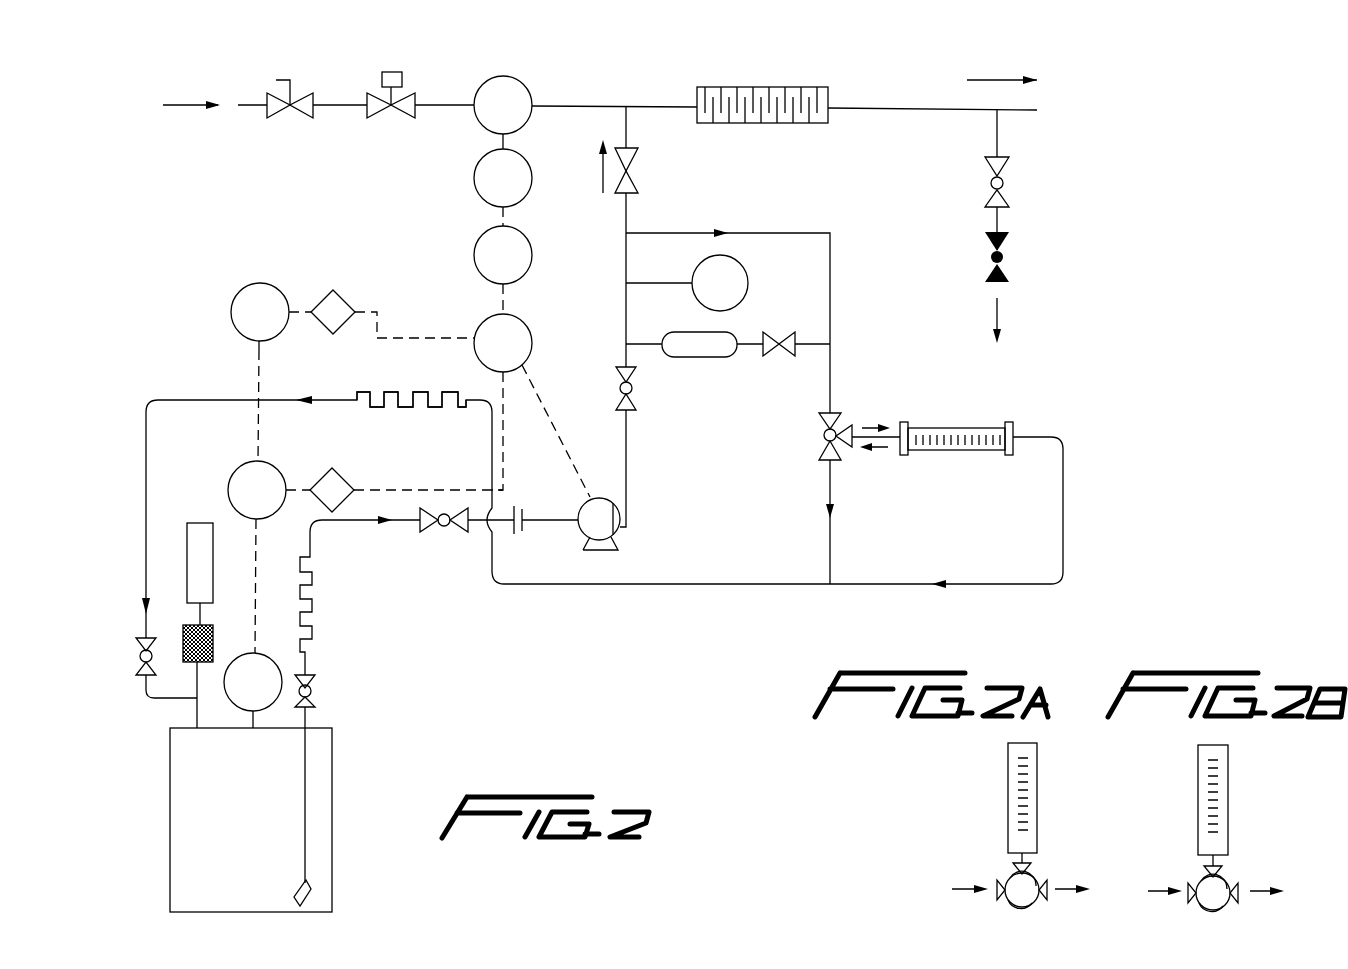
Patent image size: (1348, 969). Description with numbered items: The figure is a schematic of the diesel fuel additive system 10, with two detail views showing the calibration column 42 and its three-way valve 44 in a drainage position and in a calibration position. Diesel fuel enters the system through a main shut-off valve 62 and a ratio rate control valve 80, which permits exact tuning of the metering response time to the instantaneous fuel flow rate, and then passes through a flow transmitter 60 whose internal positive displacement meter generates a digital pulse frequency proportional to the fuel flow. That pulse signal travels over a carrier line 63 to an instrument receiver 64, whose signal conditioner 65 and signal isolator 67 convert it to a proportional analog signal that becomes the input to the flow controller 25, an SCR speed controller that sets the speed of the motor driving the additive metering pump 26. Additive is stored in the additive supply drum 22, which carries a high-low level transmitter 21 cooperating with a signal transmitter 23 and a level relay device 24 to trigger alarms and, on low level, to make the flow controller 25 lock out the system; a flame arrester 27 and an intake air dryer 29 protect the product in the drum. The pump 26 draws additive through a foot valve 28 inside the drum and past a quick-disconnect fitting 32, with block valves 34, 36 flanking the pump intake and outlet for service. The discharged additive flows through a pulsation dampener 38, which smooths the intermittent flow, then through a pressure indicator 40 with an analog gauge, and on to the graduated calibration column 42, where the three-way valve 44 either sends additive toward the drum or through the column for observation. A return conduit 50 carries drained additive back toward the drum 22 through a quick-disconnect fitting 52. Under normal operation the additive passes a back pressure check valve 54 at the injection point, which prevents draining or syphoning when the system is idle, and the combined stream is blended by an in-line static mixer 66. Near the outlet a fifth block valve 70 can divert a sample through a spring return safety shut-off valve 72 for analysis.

In FIG. 2, the fuel additive system 10 is at (1095, 138).
In FIG. 2, the high-low level transmitter 21 is at (278, 667).
In FIG. 2, the additive supply drum 22 is at (332, 765).
In FIG. 2, the signal transmitter 23 is at (233, 474).
In FIG. 2, the level relay device 24 is at (232, 318).
In FIG. 2, the flow controller 25 is at (485, 322).
In FIG. 2, the additive metering pump 26 is at (627, 528).
In FIG. 2, the flame arrester 27 is at (195, 663).
In FIG. 2, the foot valve 28 is at (312, 889).
In FIG. 2, the intake air dryer 29 is at (187, 557).
In FIG. 2, the quick-disconnect fitting 32 is at (317, 695).
In FIG. 2, the block valve 34 is at (443, 535).
In FIG. 2, the block valve 36 is at (616, 399).
In FIG. 2, the pulsation dampener 38 is at (698, 358).
In FIG. 2, the pressure indicator 40 is at (748, 272).
In FIG. 2, the graduated calibration column 42 is at (953, 428).
In FIG. 2A, the graduated calibration column 42 is at (1009, 787).
In FIG. 2B, the graduated calibration column 42 is at (1228, 803).
In FIG. 2, the three-way valve 44 is at (820, 447).
In FIG. 2A, the three-way valve 44 is at (1010, 878).
In FIG. 2B, the three-way valve 44 is at (1225, 879).
In FIG. 2, the return conduit 50 is at (433, 408).
In FIG. 2, the quick-disconnect fitting 52 is at (137, 648).
In FIG. 2, the back pressure check valve 54 is at (639, 180).
In FIG. 2, the flow transmitter 60 is at (530, 90).
In FIG. 2, the main shut-off valve 62 is at (283, 113).
In FIG. 2, the carrier line 63 is at (507, 138).
In FIG. 2, the instrument receiver 64 is at (440, 244).
In FIG. 2, the signal conditioner 65 is at (475, 180).
In FIG. 2, the in-line static mixer 66 is at (821, 88).
In FIG. 2, the signal isolator 67 is at (534, 254).
In FIG. 2, the fifth block valve 70 is at (1004, 165).
In FIG. 2, the spring return safety shut-off valve 72 is at (1004, 265).
In FIG. 2, the ratio rate control valve 80 is at (403, 112).